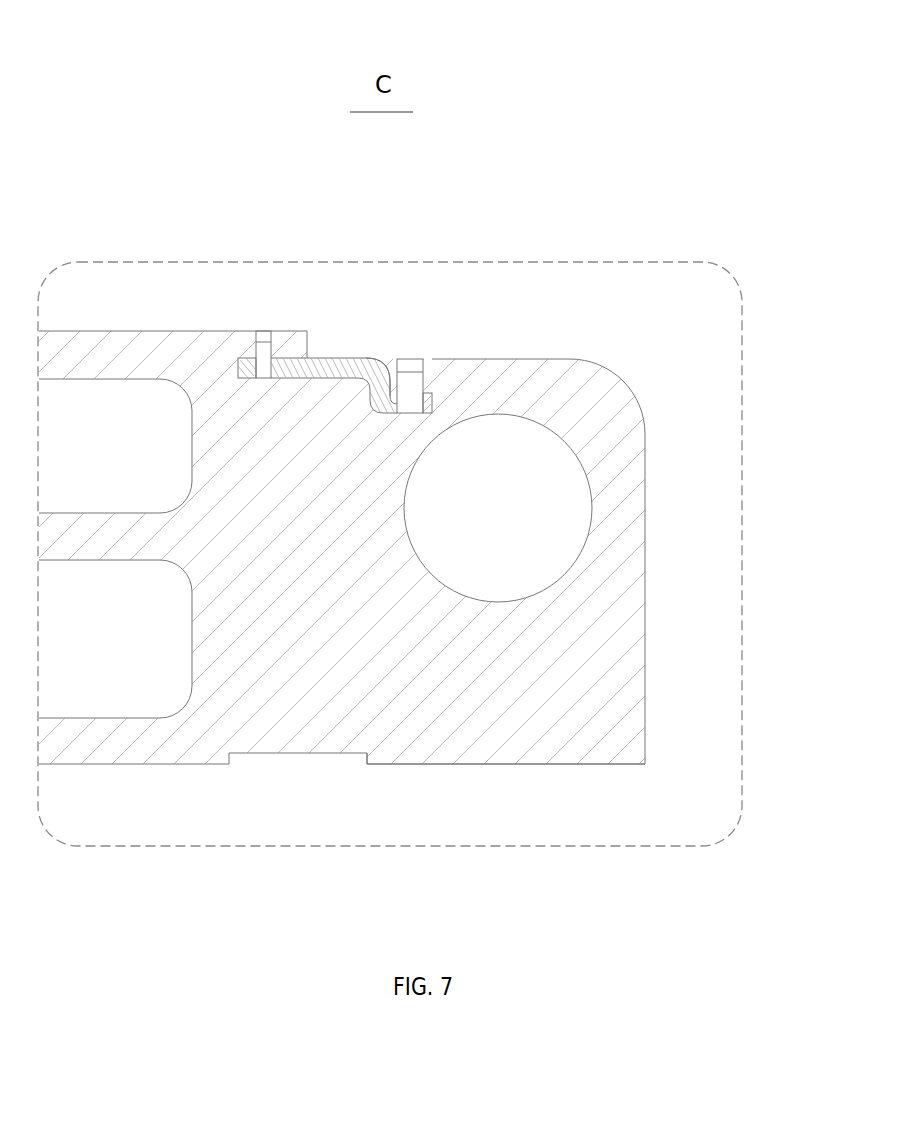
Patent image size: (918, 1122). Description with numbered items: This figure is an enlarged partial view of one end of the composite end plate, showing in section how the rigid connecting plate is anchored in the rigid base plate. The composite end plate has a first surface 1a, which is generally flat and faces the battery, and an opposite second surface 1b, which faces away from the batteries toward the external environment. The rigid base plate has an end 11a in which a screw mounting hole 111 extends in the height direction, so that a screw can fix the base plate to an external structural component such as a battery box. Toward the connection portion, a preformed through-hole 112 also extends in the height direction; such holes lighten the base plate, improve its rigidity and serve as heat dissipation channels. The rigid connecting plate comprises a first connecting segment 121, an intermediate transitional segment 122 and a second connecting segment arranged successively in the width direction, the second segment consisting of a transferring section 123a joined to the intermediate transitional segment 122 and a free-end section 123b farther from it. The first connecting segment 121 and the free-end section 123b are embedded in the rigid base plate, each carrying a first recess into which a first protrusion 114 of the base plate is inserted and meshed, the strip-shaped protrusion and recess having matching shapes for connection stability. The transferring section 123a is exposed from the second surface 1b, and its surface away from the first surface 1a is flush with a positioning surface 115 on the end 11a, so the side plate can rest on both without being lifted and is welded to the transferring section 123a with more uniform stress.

The second surface 1b is at (145, 316).
The free-end section 123b is at (248, 358).
The first protrusion 114 is at (263, 342).
The transferring section 123a is at (338, 360).
The intermediate transitional segment 122 is at (386, 364).
The first connecting segment 121 is at (429, 395).
The positioning surface 115 is at (532, 358).
The screw mounting hole 111 is at (532, 512).
The preformed through-hole 112 is at (120, 683).
The first surface 1a is at (395, 779).
The end 11a is at (509, 722).